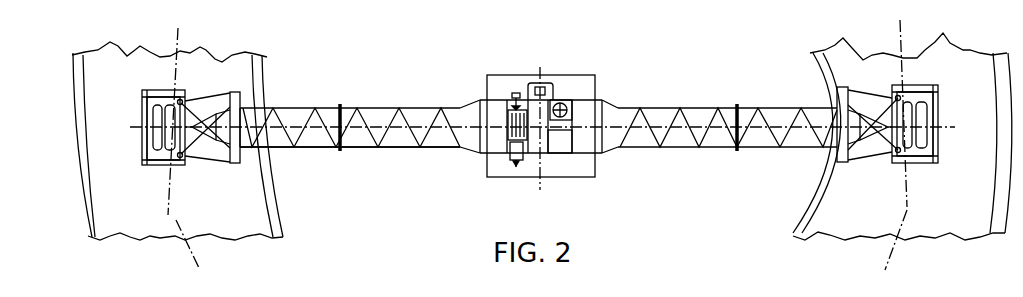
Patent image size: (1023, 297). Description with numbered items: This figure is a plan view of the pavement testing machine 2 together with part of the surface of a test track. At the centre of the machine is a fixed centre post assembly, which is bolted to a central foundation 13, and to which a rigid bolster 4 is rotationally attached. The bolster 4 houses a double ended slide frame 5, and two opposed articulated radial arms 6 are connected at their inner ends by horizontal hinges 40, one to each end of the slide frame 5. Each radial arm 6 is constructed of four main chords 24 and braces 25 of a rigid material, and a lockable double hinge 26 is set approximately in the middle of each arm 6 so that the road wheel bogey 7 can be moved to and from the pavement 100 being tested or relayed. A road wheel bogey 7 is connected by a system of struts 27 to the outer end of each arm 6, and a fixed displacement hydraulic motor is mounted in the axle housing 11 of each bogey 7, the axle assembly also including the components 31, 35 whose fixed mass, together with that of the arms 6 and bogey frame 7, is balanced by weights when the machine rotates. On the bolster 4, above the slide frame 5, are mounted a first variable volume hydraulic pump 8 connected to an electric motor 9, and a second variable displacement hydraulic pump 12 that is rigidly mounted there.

The pavement testing machine 2 is at (410, 88).
The rigid bolster 4 is at (563, 145).
The double ended slide frame 5 is at (590, 106).
The articulated radial arm 6 is at (538, 134).
The road wheel bogey 7 is at (548, 93).
The first variable volume hydraulic pump 8 is at (515, 162).
The electric motor 9 is at (507, 118).
The axle housing 11 is at (183, 101).
The second variable displacement hydraulic pump 12 is at (541, 82).
The central foundation 13 is at (595, 75).
The main chord 24 is at (398, 148).
The brace 25 is at (312, 120).
The lockable double hinge 26 is at (340, 150).
The strut 27 is at (220, 163).
The axle assembly component 31 is at (925, 136).
The axle assembly component 35 is at (207, 135).
The horizontal hinge 40 is at (477, 155).
The pavement 100 is at (204, 72).